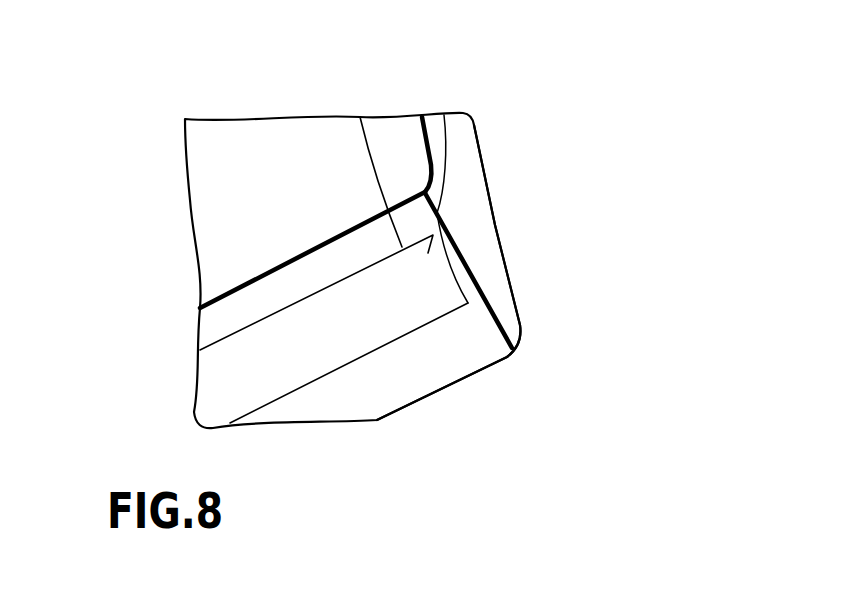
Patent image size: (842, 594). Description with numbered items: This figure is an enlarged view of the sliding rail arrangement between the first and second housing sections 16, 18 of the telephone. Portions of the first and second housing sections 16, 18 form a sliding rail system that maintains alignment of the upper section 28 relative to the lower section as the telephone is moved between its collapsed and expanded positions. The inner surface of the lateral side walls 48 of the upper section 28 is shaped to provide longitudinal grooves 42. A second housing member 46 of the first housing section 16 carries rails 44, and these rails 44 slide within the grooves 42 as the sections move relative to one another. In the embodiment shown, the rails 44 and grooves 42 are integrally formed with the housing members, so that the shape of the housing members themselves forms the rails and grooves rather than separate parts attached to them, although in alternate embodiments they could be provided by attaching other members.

The first housing section 16 is at (395, 303).
The second housing section 18 is at (455, 245).
The upper section 28 is at (507, 350).
The longitudinal grooves 42 is at (515, 333).
The rails 44 is at (444, 115).
The second housing member 46 is at (283, 333).
The lateral side walls 48 is at (468, 167).